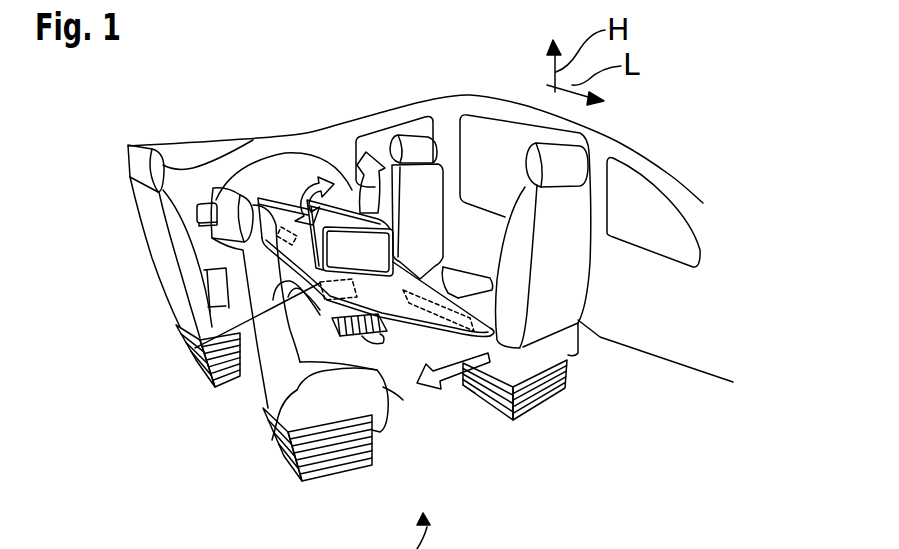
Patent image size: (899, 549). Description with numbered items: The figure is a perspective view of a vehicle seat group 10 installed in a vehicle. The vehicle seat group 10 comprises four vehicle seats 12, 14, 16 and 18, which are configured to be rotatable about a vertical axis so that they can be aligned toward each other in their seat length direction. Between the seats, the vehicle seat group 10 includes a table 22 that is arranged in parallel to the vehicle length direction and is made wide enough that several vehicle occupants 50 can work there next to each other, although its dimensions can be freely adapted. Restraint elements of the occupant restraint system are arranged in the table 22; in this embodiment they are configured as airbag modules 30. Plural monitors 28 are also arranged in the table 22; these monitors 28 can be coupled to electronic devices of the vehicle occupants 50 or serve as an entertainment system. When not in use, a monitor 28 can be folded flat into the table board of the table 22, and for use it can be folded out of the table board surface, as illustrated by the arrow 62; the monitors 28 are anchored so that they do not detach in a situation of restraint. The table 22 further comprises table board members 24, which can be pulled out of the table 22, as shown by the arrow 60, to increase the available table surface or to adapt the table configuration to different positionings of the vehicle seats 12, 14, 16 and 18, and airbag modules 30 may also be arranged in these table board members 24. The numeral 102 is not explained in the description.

The vehicle seat group 10 is at (711, 166).
The vehicle seat 12 is at (250, 388).
The vehicle seat 14 is at (570, 160).
The vehicle seat 16 is at (150, 238).
The vehicle seat 18 is at (418, 148).
The table 22 is at (425, 318).
The table board member 24 is at (403, 340).
The monitor 28 is at (347, 237).
The airbag module 30 is at (282, 250).
The vehicle occupant 50 is at (303, 360).
The arrow 60 is at (497, 400).
The arrow 62 is at (312, 184).
The side window 102 is at (663, 187).